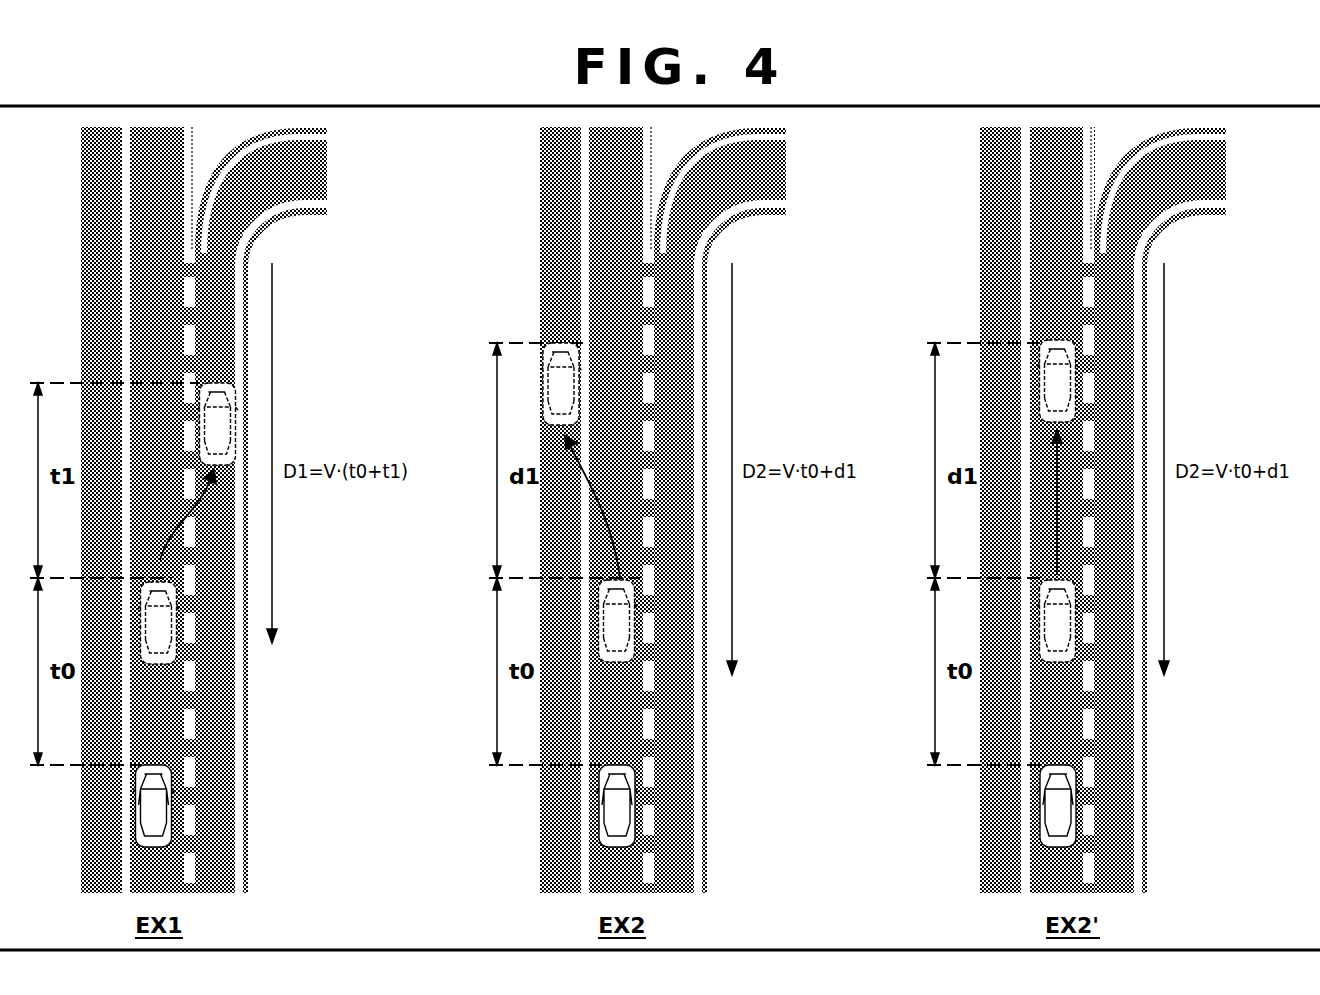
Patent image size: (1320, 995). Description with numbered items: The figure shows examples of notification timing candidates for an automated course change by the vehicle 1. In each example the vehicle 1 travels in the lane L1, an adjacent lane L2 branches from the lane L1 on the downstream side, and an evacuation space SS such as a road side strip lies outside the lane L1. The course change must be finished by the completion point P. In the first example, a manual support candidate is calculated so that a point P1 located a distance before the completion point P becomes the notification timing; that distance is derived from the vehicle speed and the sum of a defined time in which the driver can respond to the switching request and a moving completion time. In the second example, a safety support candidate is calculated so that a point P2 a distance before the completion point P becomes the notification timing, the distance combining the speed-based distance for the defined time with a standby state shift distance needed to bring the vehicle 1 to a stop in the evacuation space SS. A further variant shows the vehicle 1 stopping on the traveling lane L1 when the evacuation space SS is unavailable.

The vehicle 1 is at (1114, 393).
The evacuation space SS is at (551, 510).
The lane L1 is at (612, 510).
The lane L2 is at (710, 510).
The completion point P is at (50, 263).
The point P1 is at (253, 648).
The point P2 is at (712, 680).